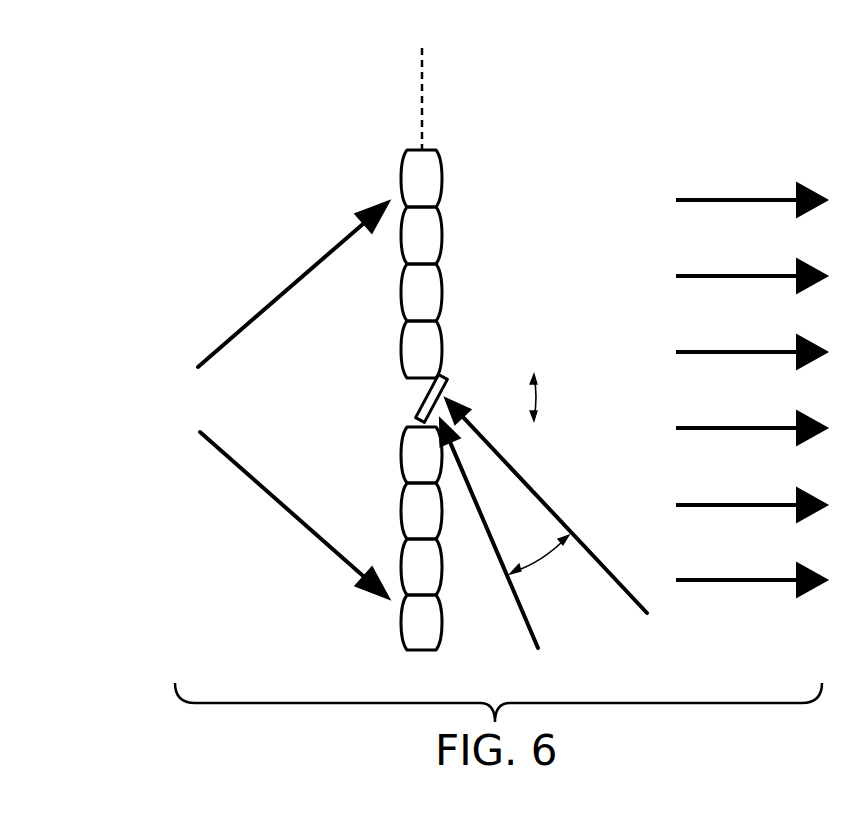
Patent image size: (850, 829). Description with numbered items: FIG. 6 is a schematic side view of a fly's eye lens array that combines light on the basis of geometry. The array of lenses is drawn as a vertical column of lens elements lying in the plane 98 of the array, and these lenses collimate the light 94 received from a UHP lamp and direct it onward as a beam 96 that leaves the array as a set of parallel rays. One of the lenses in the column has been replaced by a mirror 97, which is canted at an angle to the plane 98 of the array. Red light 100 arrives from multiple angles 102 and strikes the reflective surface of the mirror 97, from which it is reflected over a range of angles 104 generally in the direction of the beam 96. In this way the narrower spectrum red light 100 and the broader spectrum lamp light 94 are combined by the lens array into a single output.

The light 94 is at (207, 409).
The beam 96 is at (752, 406).
The mirror 97 is at (420, 393).
The plane of the array 98 is at (428, 100).
The red light 100 is at (564, 537).
The angles 102 is at (547, 561).
The range of angles 104 is at (540, 400).